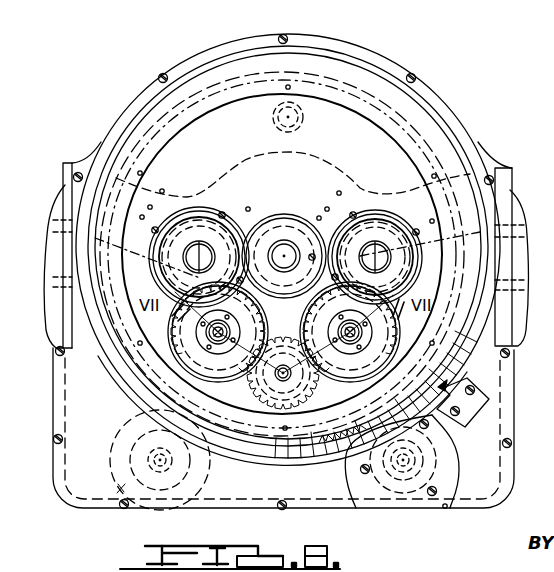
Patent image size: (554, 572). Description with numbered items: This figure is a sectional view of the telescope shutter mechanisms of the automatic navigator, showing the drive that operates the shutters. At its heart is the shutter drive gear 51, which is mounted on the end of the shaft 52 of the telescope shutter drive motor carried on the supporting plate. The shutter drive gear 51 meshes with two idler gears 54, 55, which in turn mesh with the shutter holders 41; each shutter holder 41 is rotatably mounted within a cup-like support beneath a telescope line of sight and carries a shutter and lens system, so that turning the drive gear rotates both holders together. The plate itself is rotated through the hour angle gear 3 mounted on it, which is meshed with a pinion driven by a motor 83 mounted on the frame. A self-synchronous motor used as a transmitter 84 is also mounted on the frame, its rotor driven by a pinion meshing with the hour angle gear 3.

The hour angle gear 3 is at (322, 445).
The shutter holder 41 is at (196, 232).
The shutter drive gear 51 is at (297, 391).
The shaft 52 is at (284, 366).
The idler gear 54 is at (222, 366).
The idler gear 55 is at (360, 337).
The motor 83 is at (387, 490).
The self-synchronous motor 84 is at (110, 497).